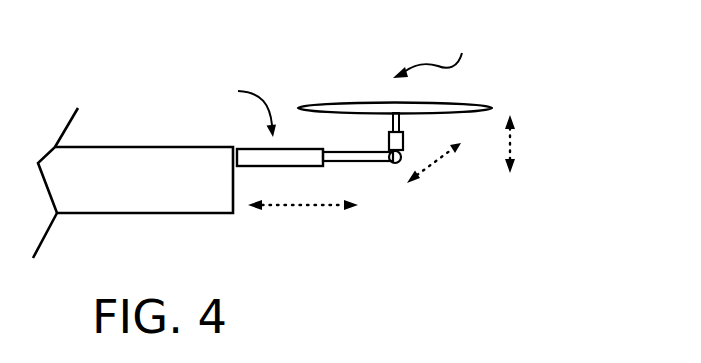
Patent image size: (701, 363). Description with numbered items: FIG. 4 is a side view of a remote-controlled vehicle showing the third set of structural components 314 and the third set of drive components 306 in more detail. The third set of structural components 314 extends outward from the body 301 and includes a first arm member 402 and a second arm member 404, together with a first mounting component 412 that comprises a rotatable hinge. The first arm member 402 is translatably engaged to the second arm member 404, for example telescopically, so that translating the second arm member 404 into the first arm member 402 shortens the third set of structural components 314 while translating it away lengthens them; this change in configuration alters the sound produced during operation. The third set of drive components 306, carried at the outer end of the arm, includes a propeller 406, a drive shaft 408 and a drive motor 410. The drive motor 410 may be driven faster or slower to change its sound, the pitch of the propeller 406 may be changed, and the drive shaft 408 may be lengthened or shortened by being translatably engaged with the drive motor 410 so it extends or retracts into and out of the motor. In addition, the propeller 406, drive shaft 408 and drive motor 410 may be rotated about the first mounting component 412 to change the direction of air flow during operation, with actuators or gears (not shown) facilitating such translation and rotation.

The body 301 is at (159, 190).
The third set of structural components 314 is at (227, 97).
The third set of drive components 306 is at (438, 52).
The propeller 406 is at (452, 102).
The first arm member 402 is at (275, 166).
The second arm member 404 is at (363, 161).
The drive shaft 408 is at (402, 123).
The drive motor 410 is at (403, 145).
The first mounting component 412 is at (401, 160).